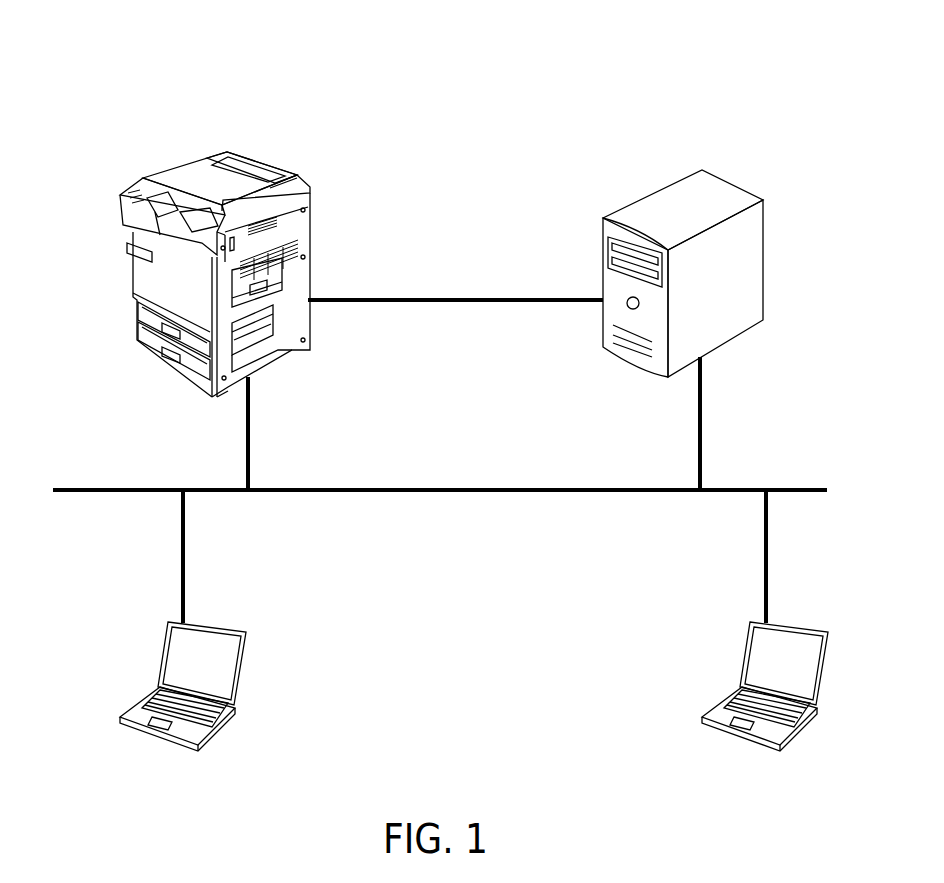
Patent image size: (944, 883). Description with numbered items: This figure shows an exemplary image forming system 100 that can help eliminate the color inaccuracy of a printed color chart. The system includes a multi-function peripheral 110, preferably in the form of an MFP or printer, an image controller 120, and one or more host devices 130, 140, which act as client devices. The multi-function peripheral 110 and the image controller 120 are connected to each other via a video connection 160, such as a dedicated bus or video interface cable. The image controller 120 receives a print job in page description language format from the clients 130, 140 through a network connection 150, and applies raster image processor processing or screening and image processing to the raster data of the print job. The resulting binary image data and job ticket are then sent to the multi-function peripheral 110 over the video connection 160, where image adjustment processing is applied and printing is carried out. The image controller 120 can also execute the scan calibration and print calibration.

The image forming system 100 is at (750, 94).
The multi-function peripheral 110 is at (172, 170).
The image controller 120 is at (745, 187).
The host device 130 is at (223, 627).
The host device 140 is at (803, 627).
The network connection 150 is at (378, 488).
The video connection 160 is at (495, 299).